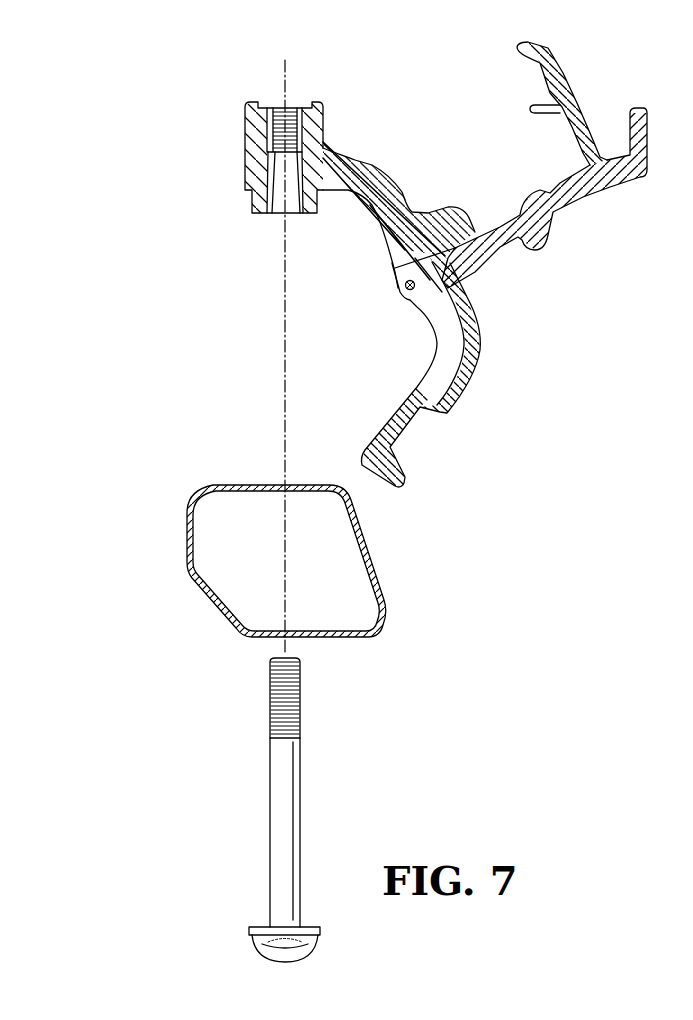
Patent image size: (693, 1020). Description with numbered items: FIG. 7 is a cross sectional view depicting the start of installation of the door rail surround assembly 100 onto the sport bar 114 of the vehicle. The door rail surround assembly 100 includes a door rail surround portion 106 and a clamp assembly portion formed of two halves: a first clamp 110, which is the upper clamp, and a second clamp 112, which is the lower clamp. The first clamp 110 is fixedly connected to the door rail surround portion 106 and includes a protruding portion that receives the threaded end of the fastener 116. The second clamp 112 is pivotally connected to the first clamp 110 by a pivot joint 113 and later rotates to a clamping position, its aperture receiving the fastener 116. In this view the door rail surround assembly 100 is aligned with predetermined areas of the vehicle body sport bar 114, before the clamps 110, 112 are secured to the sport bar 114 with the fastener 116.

The door rail surround assembly 100 is at (231, 90).
The door rail surround portion 106 is at (600, 215).
The first clamp half 110 is at (392, 166).
The second clamp half 112 is at (480, 342).
The pivot joint 113 is at (414, 289).
The sport bar 114 is at (385, 588).
The fastener 116 is at (300, 802).